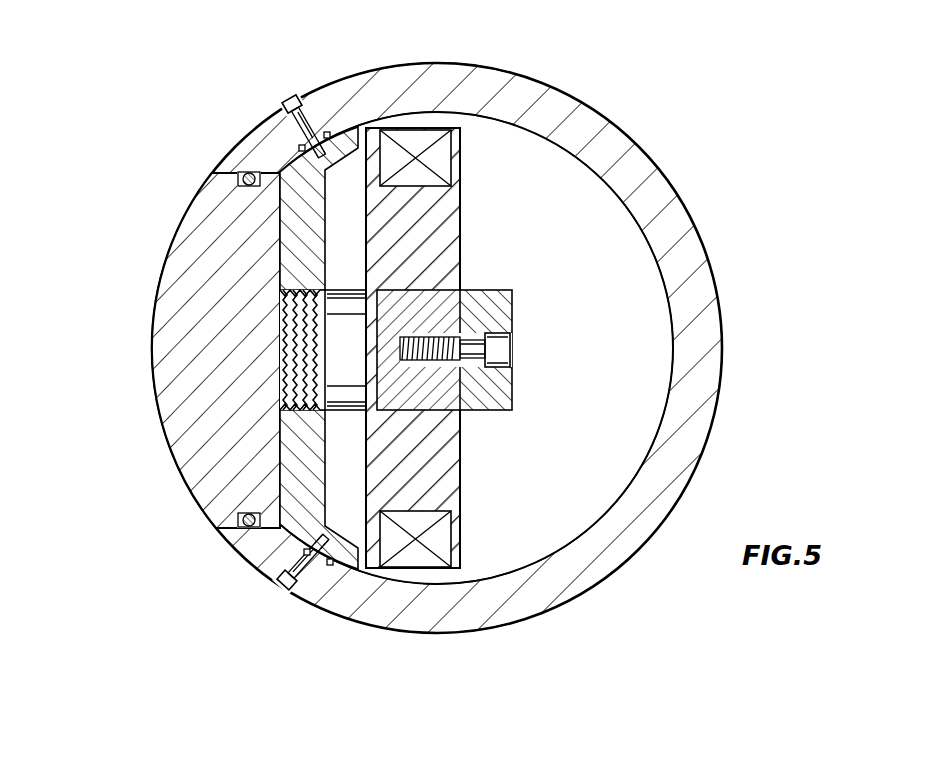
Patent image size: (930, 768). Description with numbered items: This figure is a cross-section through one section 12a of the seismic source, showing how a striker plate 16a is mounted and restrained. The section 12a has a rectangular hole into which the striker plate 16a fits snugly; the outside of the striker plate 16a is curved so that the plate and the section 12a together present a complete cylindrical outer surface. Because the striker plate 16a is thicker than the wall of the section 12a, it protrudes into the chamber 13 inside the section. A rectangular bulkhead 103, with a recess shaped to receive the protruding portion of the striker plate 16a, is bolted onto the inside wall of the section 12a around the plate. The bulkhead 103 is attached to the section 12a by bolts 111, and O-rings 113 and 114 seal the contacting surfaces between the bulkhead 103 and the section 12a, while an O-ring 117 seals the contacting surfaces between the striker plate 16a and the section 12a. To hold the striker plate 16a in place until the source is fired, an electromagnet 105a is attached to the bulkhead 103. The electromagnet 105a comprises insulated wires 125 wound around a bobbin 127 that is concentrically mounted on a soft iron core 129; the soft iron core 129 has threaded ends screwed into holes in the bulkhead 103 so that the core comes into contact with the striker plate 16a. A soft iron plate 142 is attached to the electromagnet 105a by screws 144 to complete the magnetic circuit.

The section 12a is at (607, 147).
The chamber 13 is at (566, 489).
The striker plate 16a is at (207, 452).
The bulkhead 103 is at (296, 552).
The electromagnet 105a is at (463, 125).
The bolt 111 is at (291, 98).
The O-ring 113 is at (326, 131).
The O-ring 114 is at (299, 147).
The O-ring 117 is at (237, 188).
The insulated wires 125 is at (423, 140).
The bobbin 127 is at (432, 222).
The soft iron core 129 is at (327, 333).
The soft iron plate 142 is at (492, 310).
The screw 144 is at (497, 352).